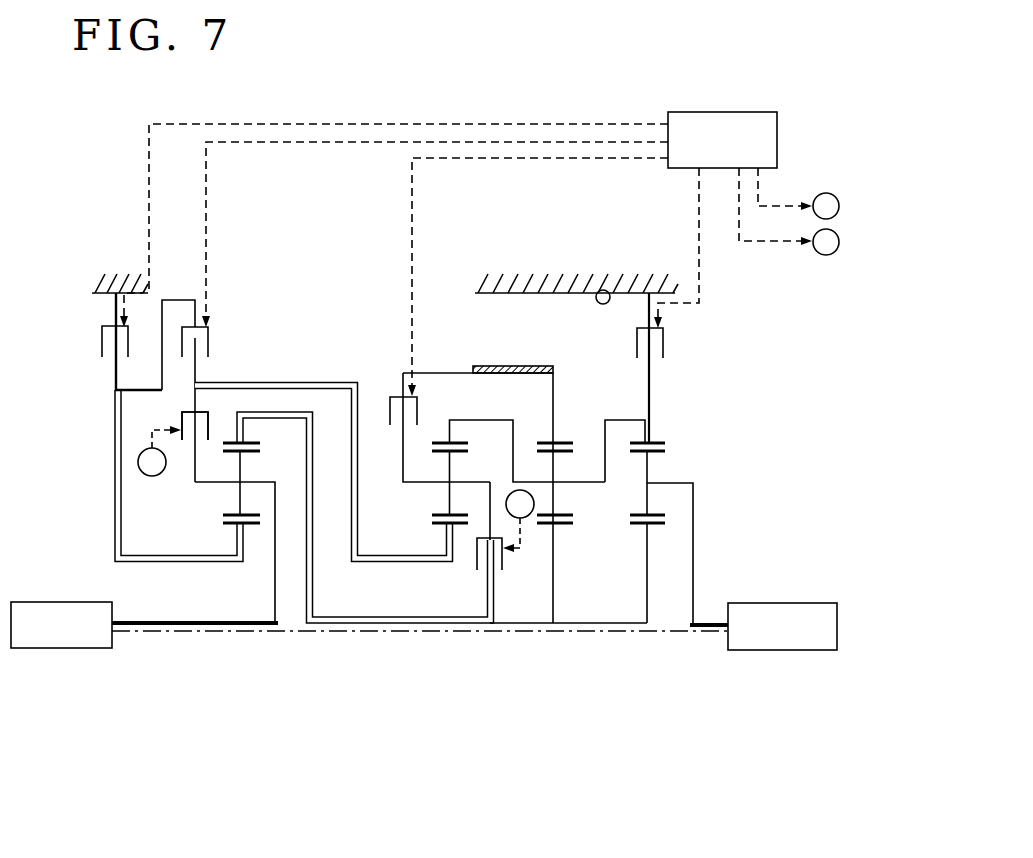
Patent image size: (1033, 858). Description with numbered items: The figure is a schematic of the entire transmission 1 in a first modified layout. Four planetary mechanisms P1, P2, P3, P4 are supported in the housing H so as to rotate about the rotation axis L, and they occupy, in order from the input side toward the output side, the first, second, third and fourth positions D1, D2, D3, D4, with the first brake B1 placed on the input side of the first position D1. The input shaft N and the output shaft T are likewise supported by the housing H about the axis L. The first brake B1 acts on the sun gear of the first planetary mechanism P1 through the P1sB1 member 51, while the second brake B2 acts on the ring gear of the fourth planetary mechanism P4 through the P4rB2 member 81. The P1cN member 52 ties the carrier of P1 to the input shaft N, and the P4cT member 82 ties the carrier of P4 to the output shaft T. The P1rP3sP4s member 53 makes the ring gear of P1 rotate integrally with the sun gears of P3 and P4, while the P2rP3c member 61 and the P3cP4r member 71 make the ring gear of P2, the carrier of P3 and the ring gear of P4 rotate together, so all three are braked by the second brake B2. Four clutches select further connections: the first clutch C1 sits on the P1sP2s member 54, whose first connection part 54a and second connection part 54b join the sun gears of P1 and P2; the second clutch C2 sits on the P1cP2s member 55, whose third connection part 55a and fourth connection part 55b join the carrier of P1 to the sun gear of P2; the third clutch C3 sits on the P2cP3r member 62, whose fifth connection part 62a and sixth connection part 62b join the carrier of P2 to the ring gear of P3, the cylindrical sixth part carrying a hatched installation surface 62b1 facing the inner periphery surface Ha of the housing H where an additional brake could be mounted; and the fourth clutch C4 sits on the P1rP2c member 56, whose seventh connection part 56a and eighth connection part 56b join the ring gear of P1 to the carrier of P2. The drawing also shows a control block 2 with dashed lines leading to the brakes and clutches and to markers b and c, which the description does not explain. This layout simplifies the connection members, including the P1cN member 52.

The transmission 1 is at (85, 190).
The ECU (electronic control unit) 2 is at (778, 140).
The P1sB1 member 51 is at (113, 385).
The P1cN member 52 is at (277, 597).
The P1rP3sP4s member 53 is at (623, 627).
The P1sP2s member 54 is at (225, 212).
The first connection part 54a is at (178, 300).
The second connection part 54b is at (320, 382).
The P1cP2s member 55 is at (26, 447).
The third connection part 55a is at (193, 470).
The fourth connection part 55b is at (193, 400).
The P1rP2c member 56 is at (540, 712).
The seventh connection part 56a is at (492, 582).
The eighth connection part 56b is at (485, 517).
The P2rP3c member 61 is at (515, 435).
The P2cP3r member 62 is at (442, 202).
The fifth connection part 62a is at (405, 437).
The sixth connection part 62b is at (553, 387).
The installation surface 62b1 is at (537, 365).
The P3cP4r member 71 is at (634, 420).
The P4rB2 member 81 is at (652, 382).
The P4cT member 82 is at (695, 518).
The first brake B1 is at (102, 343).
The second brake B2 is at (665, 343).
The first clutch C1 is at (208, 343).
The second clutch C2 is at (207, 412).
The third clutch C3 is at (417, 410).
The fourth clutch C4 is at (503, 557).
The housing H is at (117, 273).
The inner periphery surface Ha is at (604, 290).
The first planetary mechanism P1 is at (222, 534).
The second planetary mechanism P2 is at (432, 540).
The third planetary mechanism P3 is at (570, 542).
The fourth planetary mechanism P4 is at (657, 542).
The input shaft N is at (128, 620).
The output shaft T is at (708, 632).
The rotation axis L is at (168, 632).
The first position D1 is at (240, 768).
The second position D2 is at (446, 770).
The third position D3 is at (551, 770).
The fourth position D4 is at (644, 770).
The control signal b is at (488, 334).
The control signal c is at (671, 390).